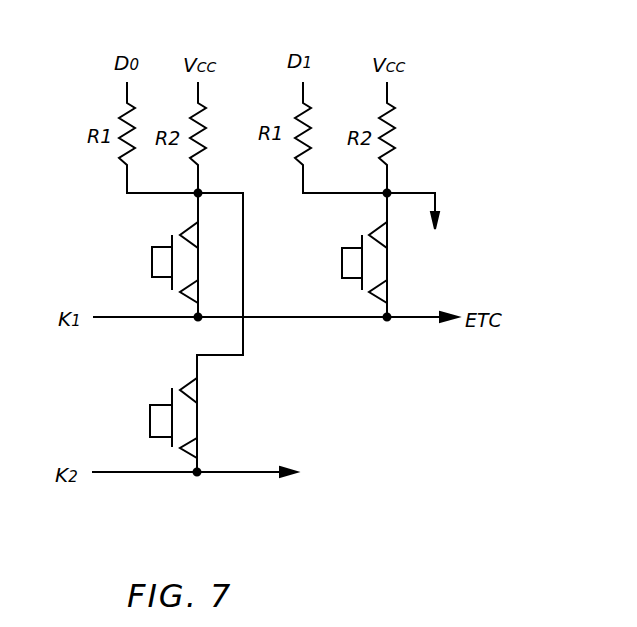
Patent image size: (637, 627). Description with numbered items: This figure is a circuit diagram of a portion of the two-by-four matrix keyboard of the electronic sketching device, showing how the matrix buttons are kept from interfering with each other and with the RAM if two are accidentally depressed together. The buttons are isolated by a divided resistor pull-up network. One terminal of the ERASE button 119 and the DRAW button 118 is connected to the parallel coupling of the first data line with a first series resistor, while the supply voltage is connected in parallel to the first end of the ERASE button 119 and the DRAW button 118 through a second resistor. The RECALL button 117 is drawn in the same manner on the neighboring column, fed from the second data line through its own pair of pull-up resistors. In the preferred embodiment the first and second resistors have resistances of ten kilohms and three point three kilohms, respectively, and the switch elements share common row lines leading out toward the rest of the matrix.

The RECALL button 117 is at (350, 280).
The DRAW button 118 is at (160, 412).
The ERASE button 119 is at (158, 250).